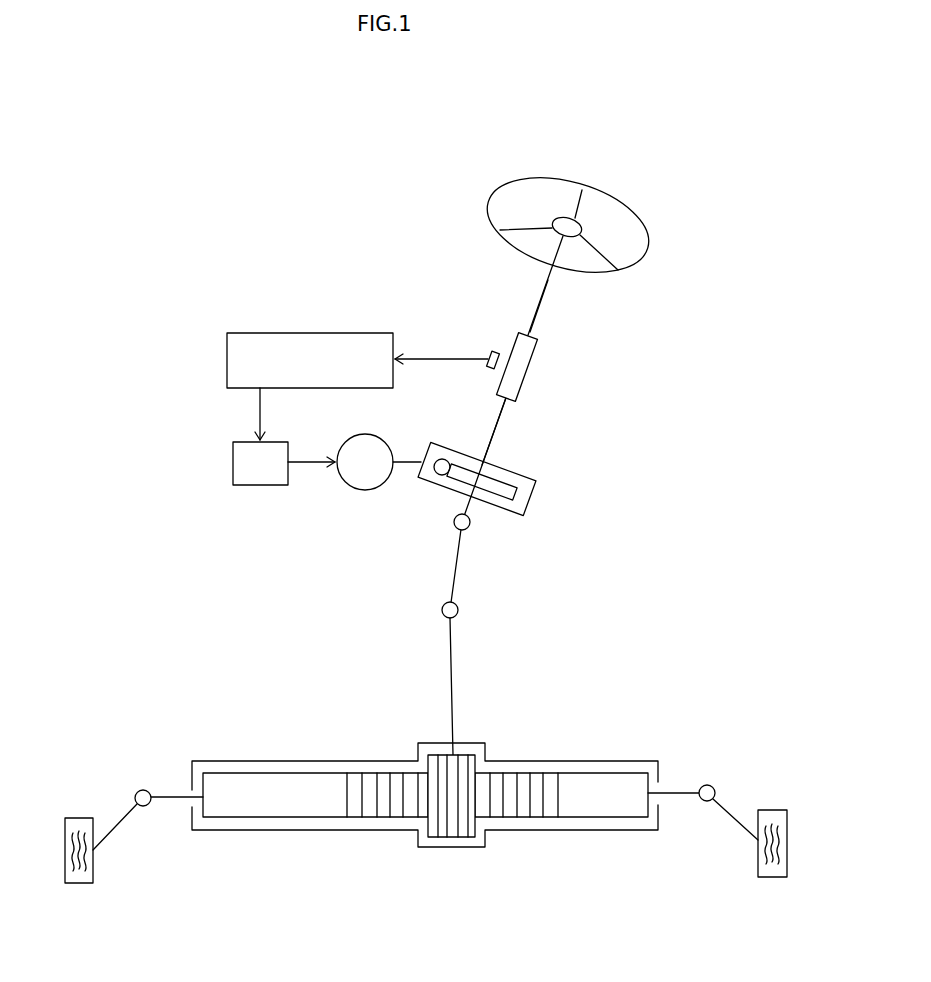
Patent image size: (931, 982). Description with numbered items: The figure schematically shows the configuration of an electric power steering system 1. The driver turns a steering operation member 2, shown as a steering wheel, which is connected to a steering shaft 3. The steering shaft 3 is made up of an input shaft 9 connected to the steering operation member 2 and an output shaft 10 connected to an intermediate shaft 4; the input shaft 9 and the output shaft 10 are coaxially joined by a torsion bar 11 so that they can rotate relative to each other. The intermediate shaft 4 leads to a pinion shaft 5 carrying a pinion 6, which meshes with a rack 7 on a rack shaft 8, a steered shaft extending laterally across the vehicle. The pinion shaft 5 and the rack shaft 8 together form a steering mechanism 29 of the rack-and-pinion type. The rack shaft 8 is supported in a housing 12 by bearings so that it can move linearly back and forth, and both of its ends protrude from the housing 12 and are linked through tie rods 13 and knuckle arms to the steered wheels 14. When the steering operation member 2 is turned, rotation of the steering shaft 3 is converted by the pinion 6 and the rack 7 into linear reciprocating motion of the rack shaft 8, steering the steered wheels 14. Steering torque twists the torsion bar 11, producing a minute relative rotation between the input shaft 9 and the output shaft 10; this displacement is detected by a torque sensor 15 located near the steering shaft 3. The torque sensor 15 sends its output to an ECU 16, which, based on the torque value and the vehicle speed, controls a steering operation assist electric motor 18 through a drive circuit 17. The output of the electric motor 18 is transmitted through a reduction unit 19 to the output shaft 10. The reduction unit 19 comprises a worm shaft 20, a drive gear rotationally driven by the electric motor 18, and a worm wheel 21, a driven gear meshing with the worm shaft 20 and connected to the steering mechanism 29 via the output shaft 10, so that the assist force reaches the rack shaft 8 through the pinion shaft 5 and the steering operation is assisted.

The electric power steering system 1 is at (667, 178).
The steering operation member 2 is at (557, 179).
The steering shaft 3 is at (549, 285).
The intermediate shaft 4 is at (460, 565).
The pinion shaft 5 is at (455, 708).
The pinion 6 is at (462, 830).
The rack 7 is at (398, 812).
The rack shaft 8 is at (522, 818).
The input shaft 9 is at (542, 313).
The output shaft 10 is at (499, 430).
The torsion bar 11 is at (530, 371).
The housing 12 is at (333, 761).
The tie rods 13 is at (128, 822).
The steered wheels 14 is at (80, 883).
The torque sensor 15 is at (494, 352).
The ECU 16 is at (255, 332).
The drive circuit 17 is at (233, 462).
The steering operation assist electric motor 18 is at (368, 490).
The reduction unit 19 is at (534, 487).
The worm shaft 20 is at (442, 476).
The worm wheel 21 is at (515, 498).
The steering mechanism 29 is at (495, 847).